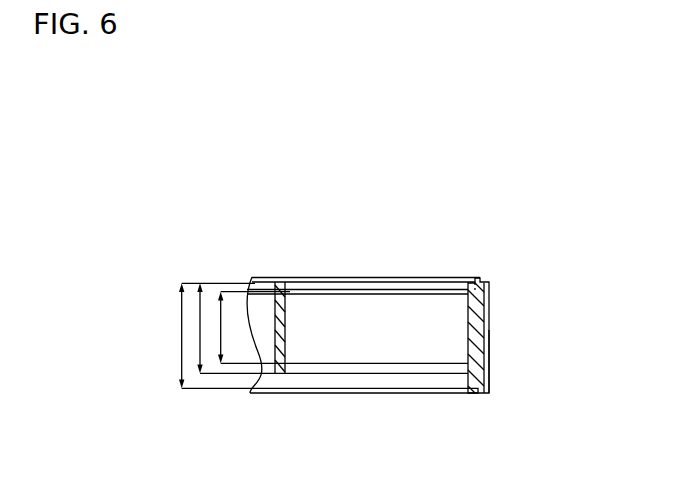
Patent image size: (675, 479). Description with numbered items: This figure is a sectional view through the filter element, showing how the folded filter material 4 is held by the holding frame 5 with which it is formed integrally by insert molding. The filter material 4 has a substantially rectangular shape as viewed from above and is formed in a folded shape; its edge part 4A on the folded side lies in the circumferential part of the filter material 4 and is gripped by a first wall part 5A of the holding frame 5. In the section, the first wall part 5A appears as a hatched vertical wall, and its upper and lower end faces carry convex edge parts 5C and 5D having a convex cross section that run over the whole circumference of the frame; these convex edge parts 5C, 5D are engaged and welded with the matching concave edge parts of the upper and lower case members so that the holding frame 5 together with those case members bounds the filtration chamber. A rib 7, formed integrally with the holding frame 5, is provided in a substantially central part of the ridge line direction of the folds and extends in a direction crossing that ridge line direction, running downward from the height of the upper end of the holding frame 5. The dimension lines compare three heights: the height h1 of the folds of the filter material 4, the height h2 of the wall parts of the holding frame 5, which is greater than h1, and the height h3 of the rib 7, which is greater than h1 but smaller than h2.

The filter material 4 is at (372, 290).
The edge part on the folded side 4A is at (478, 302).
The holding frame 5 is at (540, 323).
The first wall part 5A is at (490, 333).
The convex edge part 5C is at (478, 280).
The convex edge part 5D is at (480, 395).
The rib 7 is at (287, 332).
The height of the folds h1 is at (183, 345).
The height of the wall parts h2 is at (182, 352).
The height of the rib h3 is at (182, 338).